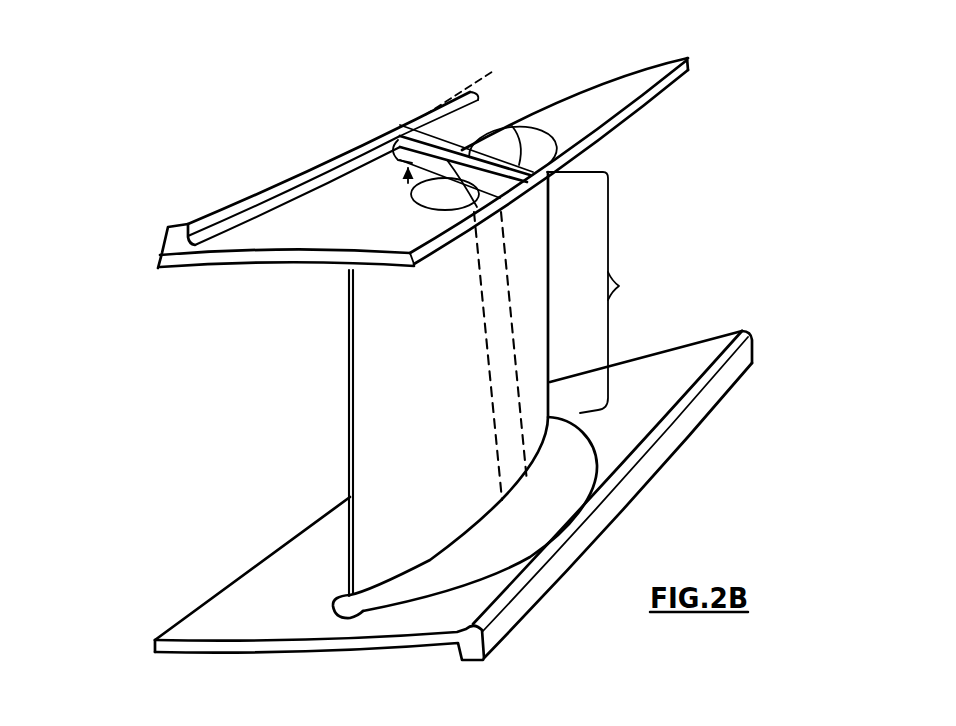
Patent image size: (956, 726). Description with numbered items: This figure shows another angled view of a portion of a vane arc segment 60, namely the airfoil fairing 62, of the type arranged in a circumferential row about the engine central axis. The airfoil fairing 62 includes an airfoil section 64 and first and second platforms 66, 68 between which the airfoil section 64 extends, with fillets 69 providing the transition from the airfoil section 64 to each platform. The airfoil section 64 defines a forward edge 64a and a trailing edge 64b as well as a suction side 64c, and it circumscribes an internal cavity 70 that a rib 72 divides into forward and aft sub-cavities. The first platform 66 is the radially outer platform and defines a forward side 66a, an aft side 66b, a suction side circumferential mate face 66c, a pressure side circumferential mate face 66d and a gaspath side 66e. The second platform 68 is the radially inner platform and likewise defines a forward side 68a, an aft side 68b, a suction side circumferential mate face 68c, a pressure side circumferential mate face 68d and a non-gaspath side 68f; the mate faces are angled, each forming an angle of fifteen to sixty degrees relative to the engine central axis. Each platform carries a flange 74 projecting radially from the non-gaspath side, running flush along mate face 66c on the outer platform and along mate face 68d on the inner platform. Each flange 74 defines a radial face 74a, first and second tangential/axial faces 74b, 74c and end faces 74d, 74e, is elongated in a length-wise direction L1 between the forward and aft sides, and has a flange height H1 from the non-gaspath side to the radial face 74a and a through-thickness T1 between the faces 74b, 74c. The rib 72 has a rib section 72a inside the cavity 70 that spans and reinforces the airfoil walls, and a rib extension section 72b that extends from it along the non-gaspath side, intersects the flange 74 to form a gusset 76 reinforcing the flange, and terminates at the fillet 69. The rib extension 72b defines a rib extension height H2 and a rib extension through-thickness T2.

The vane arc segment 60 is at (195, 443).
The airfoil fairing 62 is at (572, 368).
The airfoil section 64 is at (461, 384).
The forward edge 64a is at (549, 232).
The trailing edge 64b is at (349, 410).
The suction side 64c is at (524, 272).
The first platform 66 is at (183, 622).
The forward side 66a is at (685, 343).
The aft side 66b is at (252, 650).
The suction side circumferential mate face 66c is at (520, 598).
The pressure side circumferential mate face 66d is at (276, 548).
The gaspath side 66e is at (240, 607).
The second platform 68 is at (668, 84).
The forward side 68a is at (655, 66).
The aft side 68b is at (267, 258).
The suction side circumferential mate face 68c is at (623, 111).
The pressure side circumferential mate face 68d is at (164, 250).
The non-gaspath side 68f is at (588, 91).
The fillet 69 is at (516, 122).
The internal cavity 70 is at (406, 188).
The rib 72 is at (483, 208).
The rib section 72a is at (488, 324).
The rib extension section 72b is at (555, 163).
The flange 74 is at (199, 208).
The radial face 74a is at (372, 146).
The first tangential/axial face 74b is at (248, 216).
The second tangential/axial face 74c is at (386, 134).
The end face 74d is at (479, 96).
The end face 74e is at (162, 262).
The gusset 76 is at (432, 122).
The flange height H1 is at (283, 227).
The rib extension height H2 is at (410, 126).
The length-wise direction L1 is at (477, 77).
The flange through-thickness T1 is at (350, 180).
The rib extension through-thickness T2 is at (451, 192).